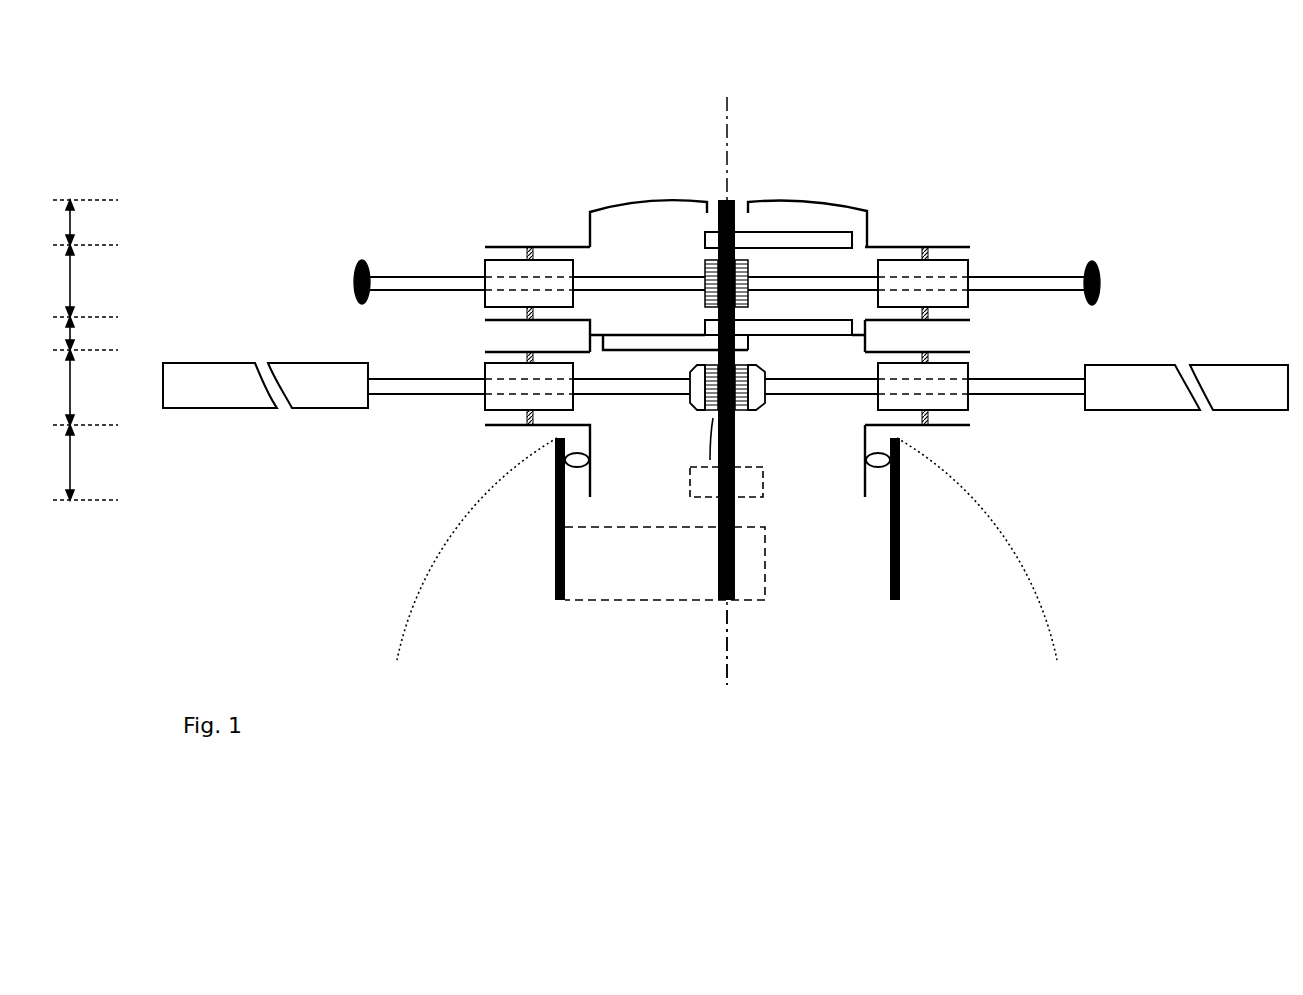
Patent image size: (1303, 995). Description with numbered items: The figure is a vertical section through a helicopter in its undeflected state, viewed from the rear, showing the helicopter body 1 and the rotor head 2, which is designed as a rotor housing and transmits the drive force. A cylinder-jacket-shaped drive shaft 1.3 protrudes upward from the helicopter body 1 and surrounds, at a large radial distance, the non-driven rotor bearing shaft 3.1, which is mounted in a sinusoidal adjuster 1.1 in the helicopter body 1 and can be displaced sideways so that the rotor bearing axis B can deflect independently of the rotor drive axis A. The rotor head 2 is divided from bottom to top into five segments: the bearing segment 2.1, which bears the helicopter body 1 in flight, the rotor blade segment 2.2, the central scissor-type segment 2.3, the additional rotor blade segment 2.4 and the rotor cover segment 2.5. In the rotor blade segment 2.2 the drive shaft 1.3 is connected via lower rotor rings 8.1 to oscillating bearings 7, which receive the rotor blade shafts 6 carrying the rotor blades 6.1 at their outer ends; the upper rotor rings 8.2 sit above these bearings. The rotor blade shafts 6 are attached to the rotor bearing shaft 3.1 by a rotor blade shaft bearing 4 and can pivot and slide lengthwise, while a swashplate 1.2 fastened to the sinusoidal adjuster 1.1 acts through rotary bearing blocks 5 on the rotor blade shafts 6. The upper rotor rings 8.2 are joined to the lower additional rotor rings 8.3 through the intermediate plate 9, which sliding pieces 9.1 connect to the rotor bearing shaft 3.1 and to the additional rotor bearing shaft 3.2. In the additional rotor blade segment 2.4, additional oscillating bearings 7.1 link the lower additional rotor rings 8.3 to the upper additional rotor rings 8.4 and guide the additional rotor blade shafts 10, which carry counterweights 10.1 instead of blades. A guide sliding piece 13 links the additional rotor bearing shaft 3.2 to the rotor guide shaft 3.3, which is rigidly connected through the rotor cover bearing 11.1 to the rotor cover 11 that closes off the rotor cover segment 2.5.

The helicopter body 1 is at (422, 537).
The sinusoidal adjuster 1.1 is at (775, 570).
The swashplate 1.2 is at (763, 505).
The drive shaft 1.3 is at (579, 485).
The rotor head 2 is at (927, 170).
The bearing segment 2.1 is at (80, 462).
The rotor blade segment 2.2 is at (80, 390).
The central scissor-type segment 2.3 is at (82, 337).
The additional rotor blade segment 2.4 is at (80, 283).
The rotor cover segment 2.5 is at (80, 228).
The rotor bearing shaft 3.1 is at (750, 440).
The additional rotor bearing shaft 3.2 is at (745, 315).
The rotor guide shaft 3.3 is at (745, 232).
The rotor blade shaft bearing 4 is at (702, 466).
The rotary bearing block 5 is at (696, 412).
The rotor blade shaft 6 is at (618, 412).
The rotor blade 6.1 is at (245, 358).
The oscillating bearing 7 is at (482, 408).
The additional oscillating bearing 7.1 is at (482, 260).
The lower rotor ring 8.1 is at (482, 426).
The upper rotor ring 8.2 is at (482, 353).
The lower additional rotor ring 8.3 is at (482, 320).
The upper additional rotor ring 8.4 is at (492, 245).
The intermediate plate 9 is at (608, 325).
The sliding piece 9.1 is at (698, 326).
The additional rotor blade shaft 10 is at (625, 250).
The counterweight 10.1 is at (345, 282).
The rotor cover 11 is at (830, 200).
The rotor cover bearing 11.1 is at (770, 185).
The guide sliding piece 13 is at (790, 255).
The rotor drive axis A is at (733, 147).
The rotor bearing axis B is at (729, 625).